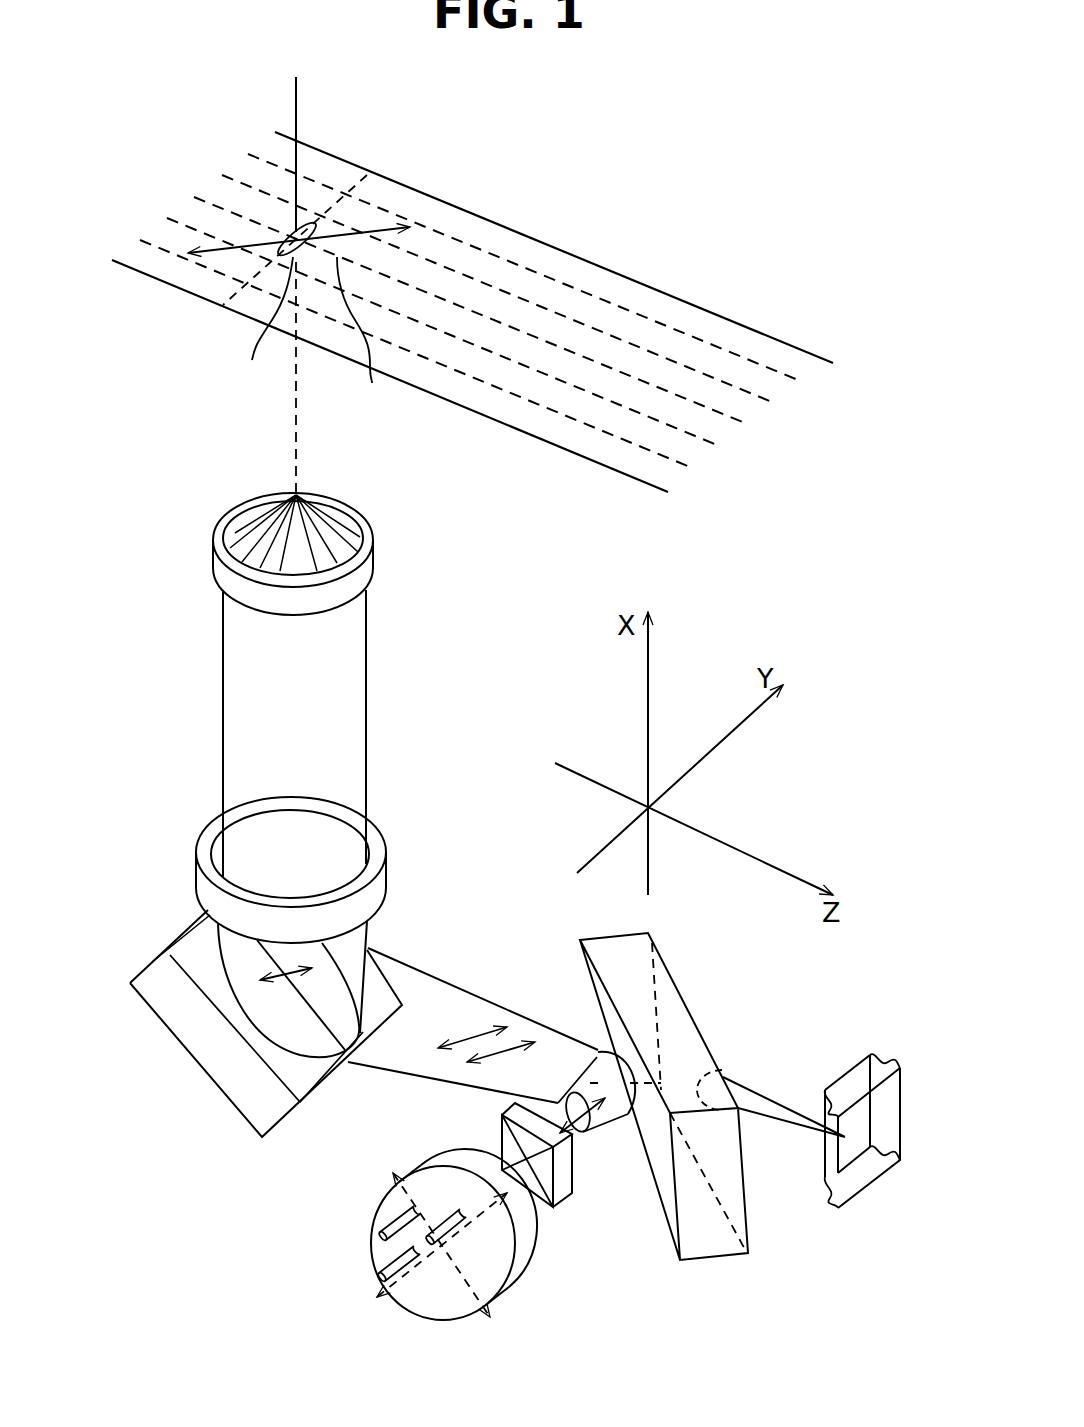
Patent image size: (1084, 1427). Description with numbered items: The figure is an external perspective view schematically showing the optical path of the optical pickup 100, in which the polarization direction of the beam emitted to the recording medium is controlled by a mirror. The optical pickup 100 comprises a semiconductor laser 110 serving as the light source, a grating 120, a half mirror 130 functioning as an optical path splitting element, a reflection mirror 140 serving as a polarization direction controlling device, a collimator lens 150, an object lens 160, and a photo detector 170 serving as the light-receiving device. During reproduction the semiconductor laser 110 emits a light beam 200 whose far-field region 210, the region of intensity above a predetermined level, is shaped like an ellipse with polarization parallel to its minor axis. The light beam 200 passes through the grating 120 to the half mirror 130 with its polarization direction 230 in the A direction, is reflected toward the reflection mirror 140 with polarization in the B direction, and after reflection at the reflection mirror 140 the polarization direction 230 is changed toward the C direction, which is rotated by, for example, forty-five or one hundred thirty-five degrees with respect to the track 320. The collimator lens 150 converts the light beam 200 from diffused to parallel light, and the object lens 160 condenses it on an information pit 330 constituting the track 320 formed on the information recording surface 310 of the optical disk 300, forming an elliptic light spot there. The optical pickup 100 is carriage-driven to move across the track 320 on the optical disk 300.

The optical pickup 100 is at (302, 1232).
The semiconductor laser 110 is at (515, 1280).
The grating 120 is at (562, 1192).
The half mirror 130 is at (713, 1247).
The reflection mirror 140 is at (212, 1055).
The collimator lens 150 is at (377, 892).
The object lens 160 is at (350, 578).
The photo detector 170 is at (852, 1080).
The light beam 200 is at (430, 972).
The far-field region 210 is at (598, 1167).
The polarization direction 230 is at (363, 228).
The optical disk 300 is at (660, 272).
The information recording surface 310 is at (545, 448).
The track 320 is at (753, 432).
The information pit 330 is at (366, 339).